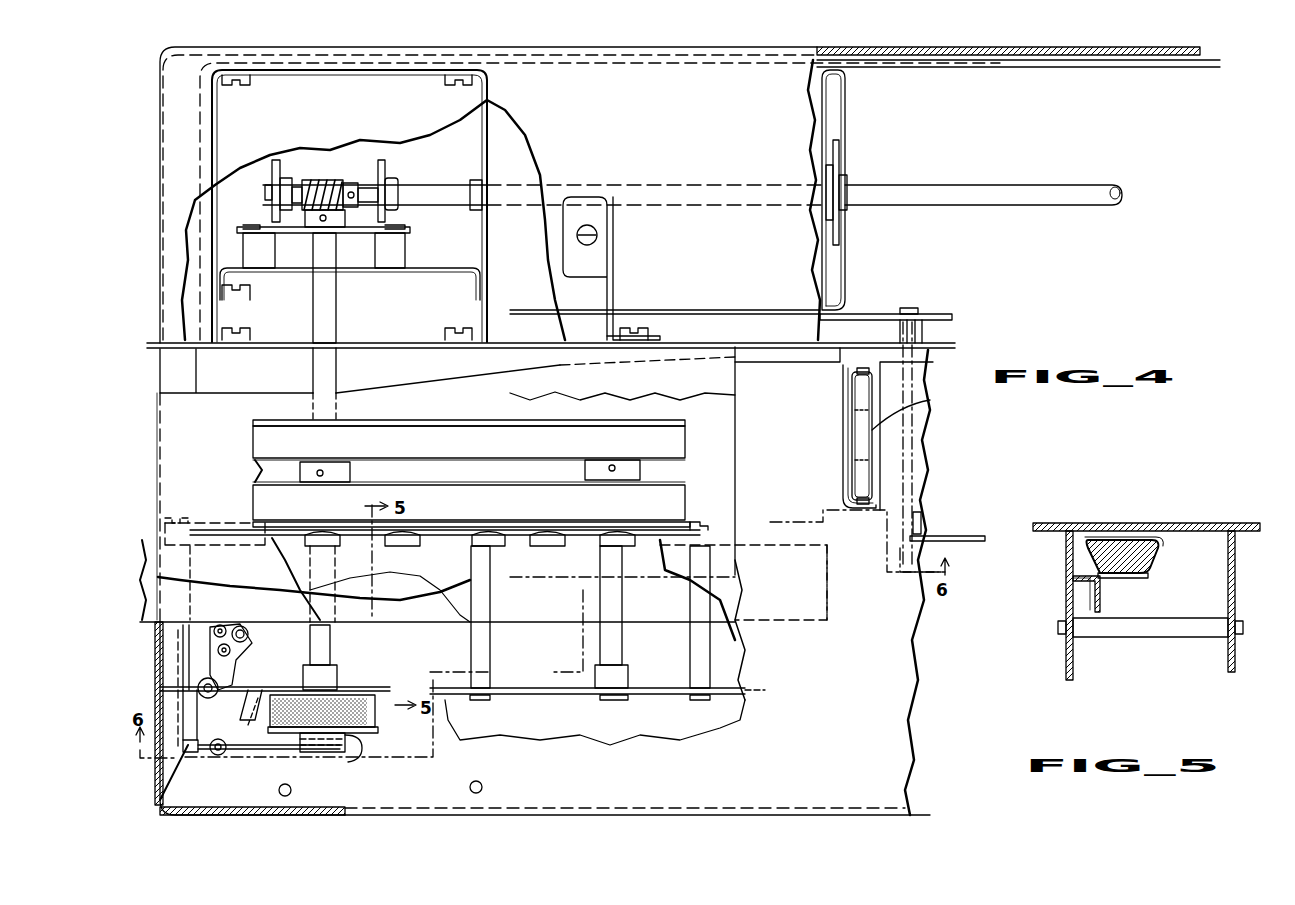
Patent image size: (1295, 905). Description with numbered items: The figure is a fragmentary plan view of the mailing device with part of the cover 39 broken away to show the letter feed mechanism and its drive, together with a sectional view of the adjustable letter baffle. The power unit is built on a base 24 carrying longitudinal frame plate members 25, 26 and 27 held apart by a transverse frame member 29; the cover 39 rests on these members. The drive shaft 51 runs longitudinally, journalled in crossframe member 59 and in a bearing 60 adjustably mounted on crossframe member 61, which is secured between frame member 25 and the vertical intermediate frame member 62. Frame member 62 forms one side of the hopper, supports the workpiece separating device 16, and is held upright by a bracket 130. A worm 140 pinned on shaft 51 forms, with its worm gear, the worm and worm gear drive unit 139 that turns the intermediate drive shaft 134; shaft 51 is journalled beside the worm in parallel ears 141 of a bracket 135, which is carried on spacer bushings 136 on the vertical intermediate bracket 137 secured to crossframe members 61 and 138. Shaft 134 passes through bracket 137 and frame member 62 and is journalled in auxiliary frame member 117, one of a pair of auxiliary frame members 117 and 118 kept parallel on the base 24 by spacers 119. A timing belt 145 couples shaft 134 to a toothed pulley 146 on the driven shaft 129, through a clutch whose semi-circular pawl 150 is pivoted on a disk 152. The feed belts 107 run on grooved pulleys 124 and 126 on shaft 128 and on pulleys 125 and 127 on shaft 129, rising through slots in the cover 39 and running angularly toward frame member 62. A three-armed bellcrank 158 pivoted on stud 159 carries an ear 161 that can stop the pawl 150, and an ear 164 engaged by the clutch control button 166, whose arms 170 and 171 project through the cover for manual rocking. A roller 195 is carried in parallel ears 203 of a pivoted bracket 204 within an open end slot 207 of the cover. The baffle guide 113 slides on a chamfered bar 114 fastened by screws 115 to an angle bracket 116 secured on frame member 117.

In FIG. 4, the frame plate member 25 is at (958, 62).
In FIG. 4, the cover 39 is at (1042, 52).
In FIG. 5, the cover 39 is at (1176, 525).
In FIG. 4, the shaft 51 is at (918, 196).
In FIG. 4, the crossframe member 59 is at (846, 282).
In FIG. 4, the frame plate member 26 is at (935, 316).
In FIG. 4, the intermediate frame member 62 is at (376, 343).
In FIG. 4, the crossframe member 61 is at (488, 308).
In FIG. 4, the parallel ears 141 is at (272, 178).
In FIG. 4, the worm 140 is at (322, 180).
In FIG. 4, the worm and worm gear drive unit 139 is at (338, 178).
In FIG. 4, the bearing 60 is at (472, 180).
In FIG. 4, the bracket 135 is at (372, 233).
In FIG. 4, the spacer bushings 136 is at (258, 255).
In FIG. 4, the intermediate bracket 137 is at (440, 275).
In FIG. 4, the auxiliary crossframe member 138 is at (240, 302).
In FIG. 4, the intermediate drive shaft 134 is at (336, 318).
In FIG. 4, the bracket 130 is at (613, 313).
In FIG. 4, the workpiece separating device 16 is at (742, 372).
In FIG. 4, the bracket 204 is at (846, 398).
In FIG. 4, the roller 195 is at (857, 433).
In FIG. 4, the parallel ears 203 is at (858, 368).
In FIG. 4, the open end slot 207 is at (919, 408).
In FIG. 4, the transverse frame member 29 is at (915, 432).
In FIG. 4, the frame plate member 27 is at (938, 540).
In FIG. 4, the feed belts 107 is at (672, 500).
In FIG. 4, the grooved pulley 127 is at (362, 420).
In FIG. 4, the grooved pulley 124 is at (560, 485).
In FIG. 4, the grooved pulley 125 is at (352, 480).
In FIG. 4, the grooved pulley 126 is at (642, 462).
In FIG. 4, the auxiliary frame member 117 is at (562, 535).
In FIG. 5, the auxiliary frame member 117 is at (1066, 655).
In FIG. 4, the spacers 119 is at (190, 552).
In FIG. 5, the spacers 119 is at (1150, 638).
In FIG. 4, the guide 113 is at (560, 622).
In FIG. 5, the guide 113 is at (1156, 553).
In FIG. 4, the shaft 128 is at (622, 645).
In FIG. 4, the auxiliary frame member 118 is at (538, 694).
In FIG. 5, the auxiliary frame member 118 is at (1228, 652).
In FIG. 4, the base 24 is at (670, 723).
In FIG. 4, the clutch control button 166 is at (218, 617).
In FIG. 4, the arm 170 is at (208, 630).
In FIG. 4, the arm 171 is at (165, 692).
In FIG. 4, the shaft 129 is at (310, 638).
In FIG. 4, the toothed pulley 146 is at (360, 676).
In FIG. 4, the stud 159 is at (252, 692).
In FIG. 4, the ear 164 is at (262, 700).
In FIG. 4, the timing belt 145 is at (375, 712).
In FIG. 4, the disk 152 is at (345, 735).
In FIG. 4, the three-armed bellcrank 158 is at (268, 752).
In FIG. 4, the pawl 150 is at (303, 752).
In FIG. 4, the ear 161 is at (358, 756).
In FIG. 5, the screws 115 is at (1130, 538).
In FIG. 5, the bar 114 is at (1150, 570).
In FIG. 5, the angle bracket 116 is at (1102, 588).